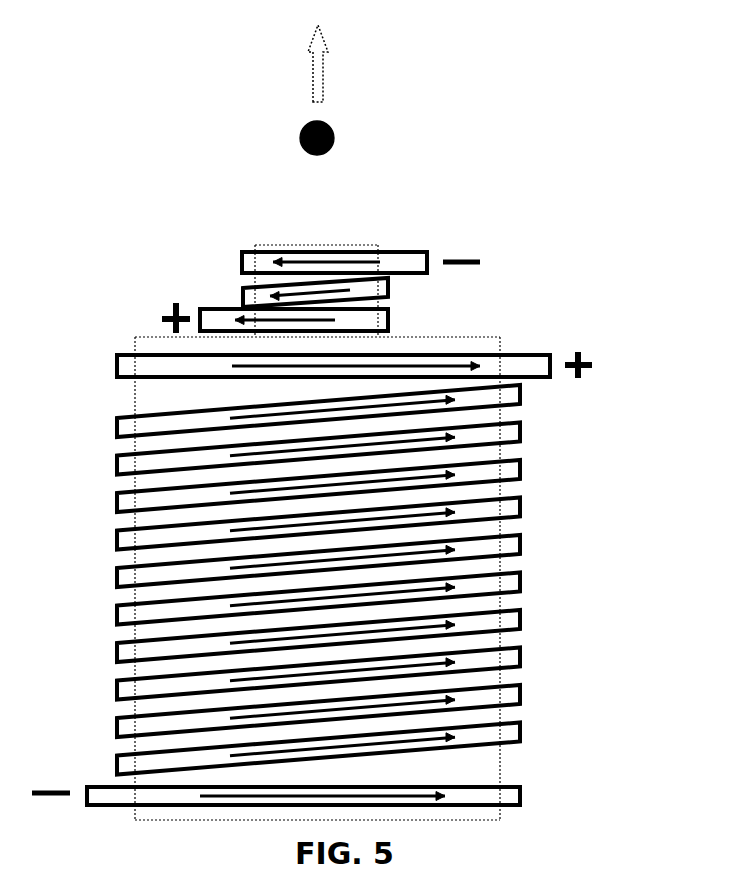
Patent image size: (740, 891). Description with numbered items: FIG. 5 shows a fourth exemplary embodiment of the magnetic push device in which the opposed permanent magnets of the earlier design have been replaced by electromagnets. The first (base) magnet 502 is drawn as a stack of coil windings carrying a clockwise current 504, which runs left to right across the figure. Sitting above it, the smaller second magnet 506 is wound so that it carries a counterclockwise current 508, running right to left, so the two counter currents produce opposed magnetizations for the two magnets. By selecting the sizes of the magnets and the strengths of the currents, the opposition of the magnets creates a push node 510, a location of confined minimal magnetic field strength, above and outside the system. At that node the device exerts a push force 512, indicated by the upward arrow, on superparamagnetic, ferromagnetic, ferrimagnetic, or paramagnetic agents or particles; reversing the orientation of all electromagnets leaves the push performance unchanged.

The first (base) magnet 502 is at (472, 563).
The clockwise current 504 is at (385, 578).
The second magnet 506 is at (403, 287).
The counterclockwise current 508 is at (176, 298).
The push node 510 is at (334, 138).
The push force 512 is at (328, 53).